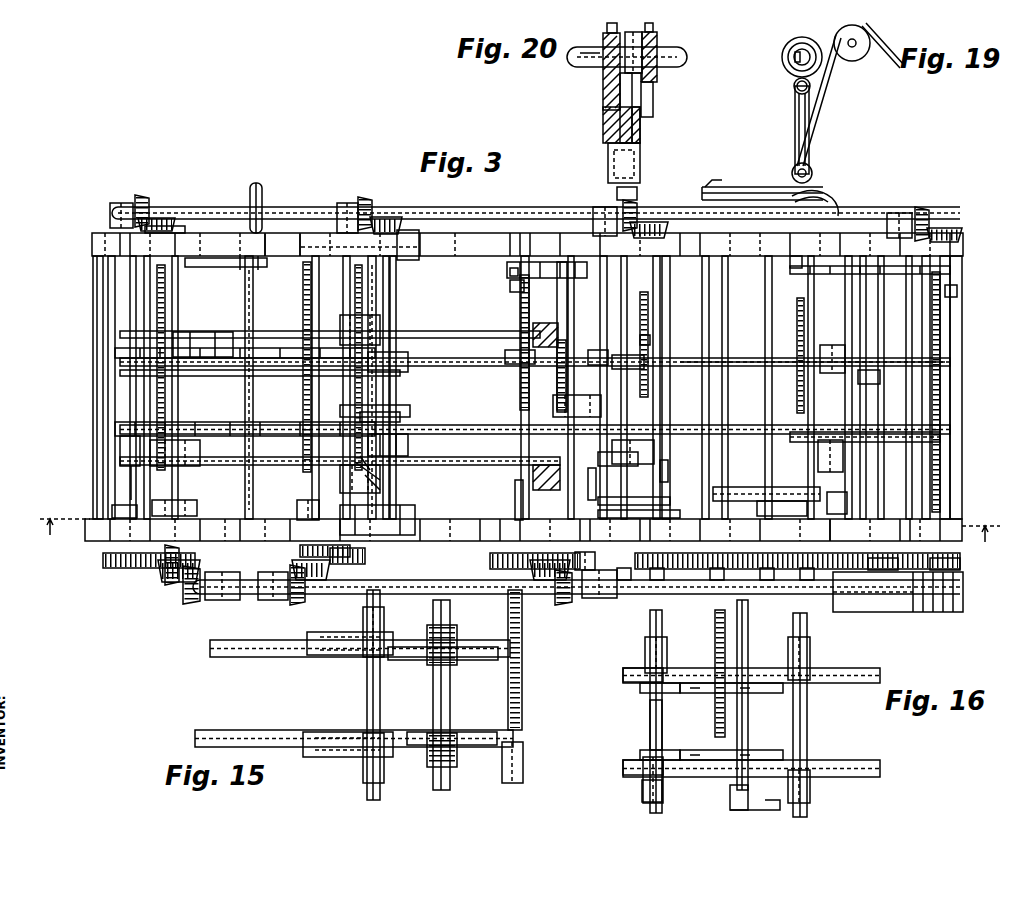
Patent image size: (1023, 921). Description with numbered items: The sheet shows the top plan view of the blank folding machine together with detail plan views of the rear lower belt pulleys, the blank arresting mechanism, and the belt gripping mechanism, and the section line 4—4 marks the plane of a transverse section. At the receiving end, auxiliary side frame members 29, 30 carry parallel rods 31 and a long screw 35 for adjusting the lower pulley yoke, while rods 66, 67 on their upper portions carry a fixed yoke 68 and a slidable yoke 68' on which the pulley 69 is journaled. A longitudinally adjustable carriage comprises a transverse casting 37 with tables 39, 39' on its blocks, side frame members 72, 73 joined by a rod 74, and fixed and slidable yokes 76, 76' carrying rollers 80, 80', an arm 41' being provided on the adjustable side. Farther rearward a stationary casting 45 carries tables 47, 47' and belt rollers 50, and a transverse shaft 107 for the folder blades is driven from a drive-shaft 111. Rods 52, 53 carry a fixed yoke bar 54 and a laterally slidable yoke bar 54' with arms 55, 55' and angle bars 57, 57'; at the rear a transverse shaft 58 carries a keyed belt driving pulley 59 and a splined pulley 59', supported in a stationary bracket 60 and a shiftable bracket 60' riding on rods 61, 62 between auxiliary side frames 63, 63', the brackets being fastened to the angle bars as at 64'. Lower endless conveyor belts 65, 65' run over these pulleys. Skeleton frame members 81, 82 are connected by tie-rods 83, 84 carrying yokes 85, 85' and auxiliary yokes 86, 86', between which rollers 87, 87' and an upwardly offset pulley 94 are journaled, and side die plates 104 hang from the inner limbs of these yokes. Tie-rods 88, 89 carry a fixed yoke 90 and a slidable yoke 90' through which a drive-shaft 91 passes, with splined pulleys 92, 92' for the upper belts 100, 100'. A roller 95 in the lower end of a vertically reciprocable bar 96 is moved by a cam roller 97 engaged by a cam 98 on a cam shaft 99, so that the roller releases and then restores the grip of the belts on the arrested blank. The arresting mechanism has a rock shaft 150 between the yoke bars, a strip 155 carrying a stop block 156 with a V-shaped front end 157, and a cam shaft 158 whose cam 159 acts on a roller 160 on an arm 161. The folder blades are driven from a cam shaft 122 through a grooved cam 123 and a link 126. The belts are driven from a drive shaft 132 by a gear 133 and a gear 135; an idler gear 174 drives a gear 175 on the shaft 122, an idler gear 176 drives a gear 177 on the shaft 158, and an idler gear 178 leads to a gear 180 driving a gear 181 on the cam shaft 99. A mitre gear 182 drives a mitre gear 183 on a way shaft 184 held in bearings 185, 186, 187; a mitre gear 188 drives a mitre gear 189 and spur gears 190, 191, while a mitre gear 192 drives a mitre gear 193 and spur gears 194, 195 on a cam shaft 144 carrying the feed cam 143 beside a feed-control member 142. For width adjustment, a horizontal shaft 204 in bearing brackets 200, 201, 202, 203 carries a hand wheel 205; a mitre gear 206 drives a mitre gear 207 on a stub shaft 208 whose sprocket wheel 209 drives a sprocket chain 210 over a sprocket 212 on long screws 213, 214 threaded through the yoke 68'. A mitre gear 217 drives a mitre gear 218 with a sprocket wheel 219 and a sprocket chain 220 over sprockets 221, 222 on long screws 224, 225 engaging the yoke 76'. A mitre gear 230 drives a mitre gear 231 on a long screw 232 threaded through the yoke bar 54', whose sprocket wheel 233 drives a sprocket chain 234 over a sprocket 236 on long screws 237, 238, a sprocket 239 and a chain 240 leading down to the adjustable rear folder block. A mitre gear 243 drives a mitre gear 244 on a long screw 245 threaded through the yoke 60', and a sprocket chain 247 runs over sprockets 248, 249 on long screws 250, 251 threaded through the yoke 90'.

In FIG. 3, the section line 4- 4 is at (512, 530).
In FIG. 3, the lower frame beam 29 is at (523, 530).
In FIG. 3, the upper frame beam 30 is at (527, 244).
In FIG. 3, the frame post 31 is at (126, 380).
In FIG. 3, the vertical rod 35 is at (152, 288).
In FIG. 3, the flange 37 is at (319, 514).
In FIG. 3, the carriage block 39 is at (386, 474).
In FIG. 3, the carriage block 39' is at (390, 330).
In FIG. 3, the bracket 41' is at (507, 359).
In FIG. 3, the plate 45 is at (614, 499).
In FIG. 3, the worm gear 47 is at (517, 477).
In FIG. 3, the worm gear 47' is at (521, 338).
In FIG. 19, the guide hook 50 is at (796, 200).
In FIG. 16, the vertical rod 52 is at (659, 715).
In FIG. 16, the vertical rod 53 is at (806, 707).
In FIG. 16, the sleeve block 54 is at (726, 786).
In FIG. 16, the sleeve block 54' is at (783, 658).
In FIG. 16, the sleeve block 55 is at (637, 780).
In FIG. 16, the sleeve block 55' is at (634, 652).
In FIG. 3, the horizontal bar 57 is at (758, 387).
In FIG. 15, the horizontal bar 57 is at (354, 731).
In FIG. 16, the horizontal bar 57 is at (754, 760).
In FIG. 3, the horizontal bar 57' is at (812, 354).
In FIG. 15, the horizontal bar 57' is at (360, 655).
In FIG. 16, the horizontal bar 57' is at (751, 666).
In FIG. 15, the vertical rod 58 is at (452, 783).
In FIG. 15, the sleeve block 59 is at (430, 737).
In FIG. 15, the sleeve block 59' is at (453, 654).
In FIG. 15, the plate 60 is at (358, 756).
In FIG. 15, the plate 60' is at (360, 635).
In FIG. 15, the vertical rod 61 is at (367, 719).
In FIG. 15, the rack block 62 is at (523, 738).
In FIG. 3, the lower frame beam 63 is at (780, 533).
In FIG. 3, the upper frame beam 63' is at (870, 262).
In FIG. 3, the cross plate 64' is at (245, 359).
In FIG. 19, the bar end piece 65 is at (711, 197).
In FIG. 15, the bar end piece 65 is at (452, 731).
In FIG. 16, the bar end piece 65 is at (627, 767).
In FIG. 15, the bar end piece 65' is at (443, 665).
In FIG. 16, the bar end piece 65' is at (626, 673).
In FIG. 3, the vertical rod 66 is at (180, 412).
In FIG. 3, the vertical rod 67 is at (253, 416).
In FIG. 3, the carriage block 68 is at (181, 461).
In FIG. 3, the carriage block 68' is at (203, 336).
In FIG. 3, the cross bar 69 is at (213, 419).
In FIG. 3, the plate 72 is at (372, 530).
In FIG. 3, the bearing block 73 is at (418, 245).
In FIG. 3, the vertical rod 74 is at (312, 455).
In FIG. 3, the bracket 76 is at (397, 415).
In FIG. 3, the bracket 76' is at (278, 376).
In FIG. 3, the carriage 80 is at (400, 445).
In FIG. 3, the carriage 80' is at (396, 361).
In FIG. 3, the lower frame beam 81 is at (545, 530).
In FIG. 3, the upper frame beam 82 is at (546, 246).
In FIG. 3, the vertical rod 83 is at (520, 495).
In FIG. 3, the rod 84 is at (596, 484).
In FIG. 3, the hub 85 is at (573, 410).
In FIG. 20, the hub 85 is at (594, 67).
In FIG. 3, the rod 85' is at (594, 387).
In FIG. 3, the bracket 86 is at (620, 466).
In FIG. 3, the bracket 86' is at (604, 345).
In FIG. 3, the block 87 is at (633, 452).
In FIG. 3, the block 87' is at (628, 353).
In FIG. 3, the block 88 is at (829, 510).
In FIG. 3, the frame post 89 is at (942, 498).
In FIG. 3, the carriage block 90 is at (837, 463).
In FIG. 3, the carriage block 90' is at (842, 351).
In FIG. 3, the vertical rod 91 is at (879, 403).
In FIG. 3, the horizontal rod 92 is at (865, 430).
In FIG. 3, the block 92' is at (859, 384).
In FIG. 19, the pulley 94 is at (858, 57).
In FIG. 20, the roller 95 is at (637, 154).
In FIG. 19, the roller 95 is at (794, 172).
In FIG. 20, the connecting rod 96 is at (621, 120).
In FIG. 19, the connecting rod 96 is at (796, 122).
In FIG. 20, the pin 97 is at (636, 100).
In FIG. 19, the pin 97 is at (794, 88).
In FIG. 20, the pulley 98 is at (655, 38).
In FIG. 19, the pulley 98 is at (798, 40).
In FIG. 3, the shaft 99 is at (516, 508).
In FIG. 20, the shaft 99 is at (588, 60).
In FIG. 19, the shaft 99 is at (798, 60).
In FIG. 3, the shaft 100 is at (535, 422).
In FIG. 19, the shaft 100 is at (762, 180).
In FIG. 3, the shaft 100' is at (535, 353).
In FIG. 20, the bushing 104 is at (643, 128).
In FIG. 3, the plate 107 is at (370, 414).
In FIG. 3, the horizontal rod 111 is at (478, 338).
In FIG. 3, the plate 122 is at (806, 499).
In FIG. 3, the vertical rod 123 is at (777, 462).
In FIG. 3, the plate 126 is at (622, 513).
In FIG. 3, the drum 132 is at (905, 577).
In FIG. 3, the bracket 133 is at (945, 565).
In FIG. 3, the bracket 135 is at (872, 563).
In FIG. 3, the block 142 is at (168, 508).
In FIG. 3, the bracket 143 is at (115, 510).
In FIG. 3, the bracket 144 is at (137, 477).
In FIG. 3, the vertical rod 150 is at (624, 420).
In FIG. 16, the vertical rod 150 is at (748, 722).
In FIG. 16, the plate 155 is at (703, 687).
In FIG. 16, the rod portion 156 is at (650, 750).
In FIG. 16, the plate end 157 is at (646, 689).
In FIG. 3, the block 158 is at (657, 333).
In FIG. 3, the rod 159 is at (664, 481).
In FIG. 16, the bracket 160 is at (746, 808).
In FIG. 16, the bracket 161 is at (748, 798).
In FIG. 3, the bracket 174 is at (821, 563).
In FIG. 3, the bracket 175 is at (770, 566).
In FIG. 3, the bracket 176 is at (719, 565).
In FIG. 3, the bracket 177 is at (668, 568).
In FIG. 3, the bracket 178 is at (619, 567).
In FIG. 3, the gear 180 is at (570, 560).
In FIG. 3, the rack 181 is at (488, 553).
In FIG. 3, the bevel gear 182 is at (553, 576).
In FIG. 3, the bevel gear 183 is at (562, 594).
In FIG. 3, the drive shaft 184 is at (413, 580).
In FIG. 3, the bearing block 185 is at (230, 584).
In FIG. 3, the bearing block 186 is at (277, 588).
In FIG. 3, the bearing block 187 is at (596, 592).
In FIG. 3, the bevel gear 188 is at (298, 589).
In FIG. 3, the bevel gear 189 is at (326, 580).
In FIG. 3, the rack 190 is at (305, 545).
In FIG. 3, the gear 191 is at (350, 558).
In FIG. 3, the bevel gear 192 is at (192, 598).
In FIG. 3, the bevel gear 193 is at (173, 575).
In FIG. 3, the bevel gear 194 is at (166, 550).
In FIG. 3, the rack 195 is at (117, 552).
In FIG. 3, the bearing block 200 is at (112, 205).
In FIG. 3, the bearing block 201 is at (346, 204).
In FIG. 3, the bearing block 202 is at (600, 208).
In FIG. 3, the bearing block 203 is at (896, 214).
In FIG. 3, the upper shaft 204 is at (491, 216).
In FIG. 3, the disc 205 is at (257, 184).
In FIG. 3, the bevel gear 206 is at (143, 197).
In FIG. 3, the bevel gear 207 is at (160, 217).
In FIG. 3, the collar 208 is at (170, 234).
In FIG. 3, the vertical rod 209 is at (150, 268).
In FIG. 3, the cross bar 210 is at (222, 267).
In FIG. 3, the bearing 212 is at (255, 266).
In FIG. 3, the rack 213 is at (156, 308).
In FIG. 3, the vertical rod 214 is at (255, 298).
In FIG. 3, the bevel gear 217 is at (366, 198).
In FIG. 3, the bevel gear 218 is at (386, 219).
In FIG. 3, the vertical rod 219 is at (396, 268).
In FIG. 3, the vertical rod 220 is at (385, 282).
In FIG. 3, the beam 221 is at (405, 257).
In FIG. 3, the beam section 222 is at (282, 245).
In FIG. 3, the rack 224 is at (305, 300).
In FIG. 3, the rack 225 is at (362, 312).
In FIG. 3, the bevel gear 230 is at (633, 205).
In FIG. 3, the bevel gear 231 is at (666, 236).
In FIG. 3, the rack 232 is at (645, 312).
In FIG. 16, the rack 232 is at (715, 629).
In FIG. 3, the vertical rod 233 is at (656, 270).
In FIG. 3, the vertical rod 234 is at (622, 272).
In FIG. 3, the bracket 236 is at (540, 272).
In FIG. 3, the vertical rod 237 is at (578, 292).
In FIG. 3, the rack 238 is at (525, 303).
In FIG. 3, the block 239 is at (515, 283).
In FIG. 3, the cross bar 240 is at (537, 267).
In FIG. 3, the bevel gear 243 is at (926, 208).
In FIG. 3, the bevel gear 244 is at (948, 228).
In FIG. 15, the rack 245 is at (521, 666).
In FIG. 3, the vertical rod 247 is at (862, 274).
In FIG. 3, the bracket 248 is at (957, 281).
In FIG. 3, the bracket 249 is at (793, 264).
In FIG. 3, the rack 250 is at (941, 323).
In FIG. 3, the rack 251 is at (797, 311).